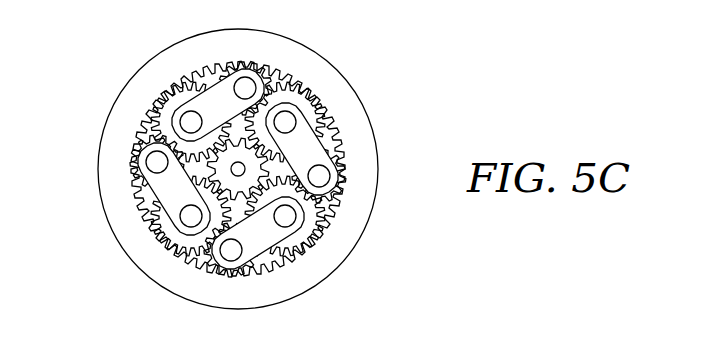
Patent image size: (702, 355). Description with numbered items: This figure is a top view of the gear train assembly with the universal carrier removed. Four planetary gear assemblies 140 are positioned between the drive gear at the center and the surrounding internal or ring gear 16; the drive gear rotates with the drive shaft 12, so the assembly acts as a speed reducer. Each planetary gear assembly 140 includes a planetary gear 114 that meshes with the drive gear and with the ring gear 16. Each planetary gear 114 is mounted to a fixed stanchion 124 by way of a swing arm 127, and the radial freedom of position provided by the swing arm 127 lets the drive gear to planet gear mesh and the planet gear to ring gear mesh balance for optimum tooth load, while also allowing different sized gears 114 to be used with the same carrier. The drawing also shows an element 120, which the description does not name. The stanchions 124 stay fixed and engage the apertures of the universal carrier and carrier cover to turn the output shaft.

The drive shaft 12 is at (233, 128).
The internal or ring gear 16 is at (348, 243).
The planetary gear 114 is at (155, 106).
The planet gear pin 120 is at (285, 122).
The stanchion 124 is at (157, 163).
The swing arm 127 is at (187, 92).
The planetary gear assembly 140 is at (277, 77).